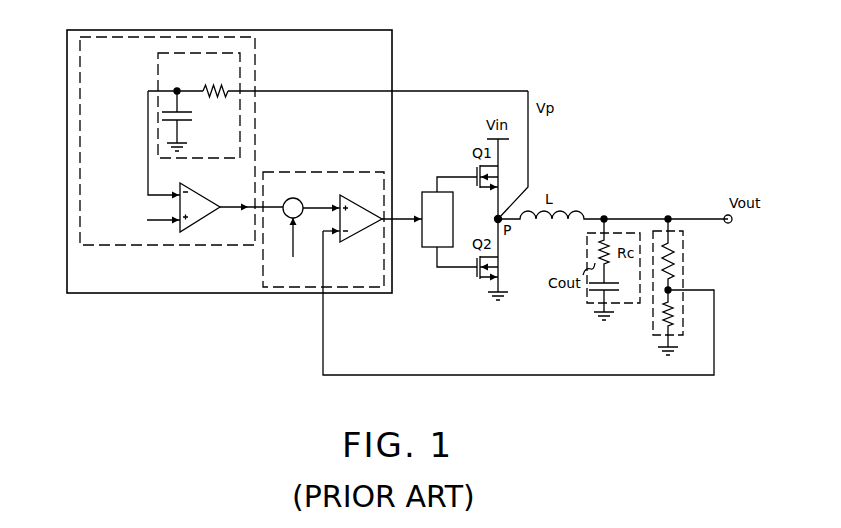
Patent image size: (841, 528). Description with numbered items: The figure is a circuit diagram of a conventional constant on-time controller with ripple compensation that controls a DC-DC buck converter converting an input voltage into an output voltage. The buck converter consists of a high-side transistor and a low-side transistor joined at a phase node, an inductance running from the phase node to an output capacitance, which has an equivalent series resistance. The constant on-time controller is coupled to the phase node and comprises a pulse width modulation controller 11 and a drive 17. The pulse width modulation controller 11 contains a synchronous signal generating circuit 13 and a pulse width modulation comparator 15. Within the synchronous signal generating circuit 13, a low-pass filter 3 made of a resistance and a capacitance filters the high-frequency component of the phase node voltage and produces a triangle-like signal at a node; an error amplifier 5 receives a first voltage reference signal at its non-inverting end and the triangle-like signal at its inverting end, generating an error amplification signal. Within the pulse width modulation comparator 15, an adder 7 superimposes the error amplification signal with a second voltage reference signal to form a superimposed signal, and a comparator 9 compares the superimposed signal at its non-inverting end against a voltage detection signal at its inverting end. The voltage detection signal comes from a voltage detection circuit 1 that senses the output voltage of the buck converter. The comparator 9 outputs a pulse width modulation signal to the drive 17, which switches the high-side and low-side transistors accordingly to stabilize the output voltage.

The voltage detection circuit 1 is at (683, 258).
The low-pass filter 3 is at (158, 86).
The error amplifier 5 is at (203, 216).
The adder 7 is at (288, 193).
The comparator 9 is at (360, 230).
The pulse width modulation controller 11 is at (157, 288).
The synchronous signal generating circuit 13 is at (157, 245).
The pulse width modulation comparator 15 is at (345, 172).
The drive 17 is at (447, 227).